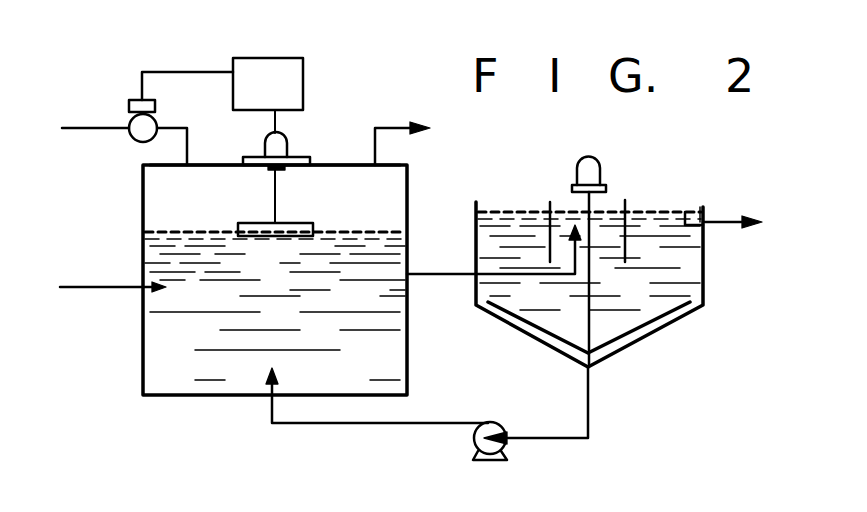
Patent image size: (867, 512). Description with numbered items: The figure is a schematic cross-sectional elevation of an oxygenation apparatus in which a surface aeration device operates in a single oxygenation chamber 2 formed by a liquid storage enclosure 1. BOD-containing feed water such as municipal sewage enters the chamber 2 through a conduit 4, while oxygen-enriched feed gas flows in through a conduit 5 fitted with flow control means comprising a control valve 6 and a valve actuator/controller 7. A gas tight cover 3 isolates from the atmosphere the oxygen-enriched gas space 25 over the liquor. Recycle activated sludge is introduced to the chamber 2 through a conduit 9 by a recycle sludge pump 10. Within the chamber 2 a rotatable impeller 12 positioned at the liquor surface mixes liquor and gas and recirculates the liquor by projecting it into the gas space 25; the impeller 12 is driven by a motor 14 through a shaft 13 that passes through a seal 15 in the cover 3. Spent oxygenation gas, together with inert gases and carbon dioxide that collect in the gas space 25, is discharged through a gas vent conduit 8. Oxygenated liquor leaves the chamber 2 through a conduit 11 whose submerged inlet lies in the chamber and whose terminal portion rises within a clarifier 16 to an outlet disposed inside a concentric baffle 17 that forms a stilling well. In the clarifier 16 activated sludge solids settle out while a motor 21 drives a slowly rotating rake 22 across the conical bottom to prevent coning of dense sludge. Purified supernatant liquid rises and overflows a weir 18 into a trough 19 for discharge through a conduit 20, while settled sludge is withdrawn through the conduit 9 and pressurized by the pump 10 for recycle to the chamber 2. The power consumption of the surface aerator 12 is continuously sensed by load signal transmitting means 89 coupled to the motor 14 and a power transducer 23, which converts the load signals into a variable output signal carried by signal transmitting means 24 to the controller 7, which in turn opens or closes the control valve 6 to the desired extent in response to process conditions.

The liquid storage enclosure 1 is at (180, 396).
The oxygenation chamber 2 is at (292, 325).
The gas tight cover 3 is at (229, 165).
The conduit 4 is at (112, 282).
The conduit 5 is at (100, 143).
The control valve 6 is at (152, 139).
The valve actuator/controller 7 is at (130, 100).
The gas vent conduit 8 is at (376, 128).
The conduit 9 is at (568, 440).
The recycle sludge pump 10 is at (490, 422).
The conduit 11 is at (440, 276).
The rotatable impeller 12 is at (305, 223).
The shaft 13 is at (276, 202).
The motor 14 is at (290, 153).
The seal 15 is at (268, 172).
The clarifier 16 is at (706, 280).
The concentric baffle 17 is at (625, 200).
The weir 18 is at (690, 212).
The trough 19 is at (700, 222).
The conduit 20 is at (712, 226).
The motor 21 is at (580, 168).
The rake 22 is at (645, 332).
The power transducer 23 is at (305, 72).
The signal transmitting means 24 is at (175, 72).
The gas space 25 is at (158, 204).
The load signal transmitting means 89 is at (285, 133).